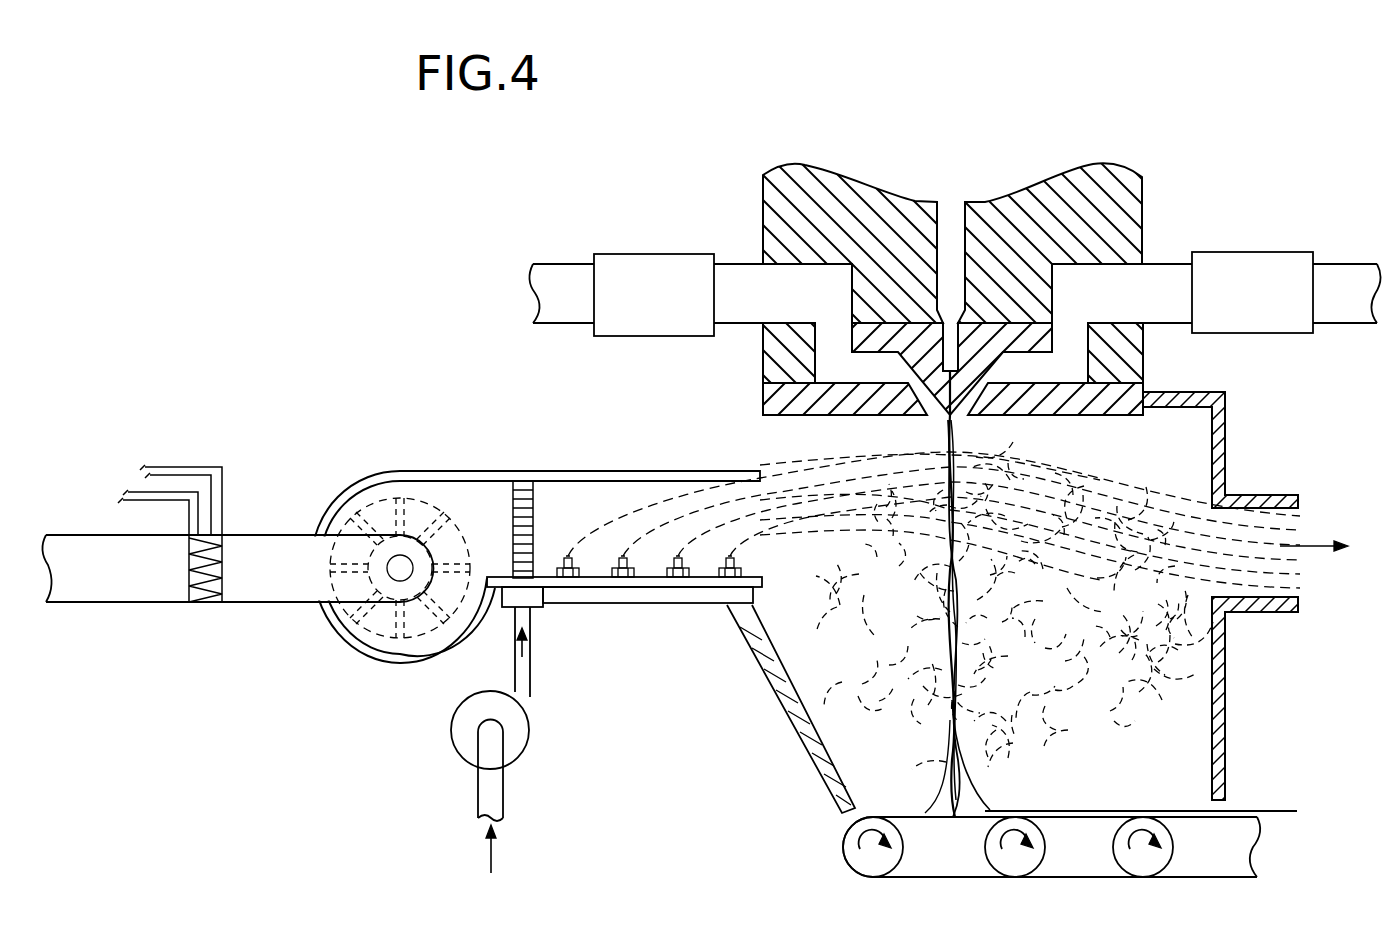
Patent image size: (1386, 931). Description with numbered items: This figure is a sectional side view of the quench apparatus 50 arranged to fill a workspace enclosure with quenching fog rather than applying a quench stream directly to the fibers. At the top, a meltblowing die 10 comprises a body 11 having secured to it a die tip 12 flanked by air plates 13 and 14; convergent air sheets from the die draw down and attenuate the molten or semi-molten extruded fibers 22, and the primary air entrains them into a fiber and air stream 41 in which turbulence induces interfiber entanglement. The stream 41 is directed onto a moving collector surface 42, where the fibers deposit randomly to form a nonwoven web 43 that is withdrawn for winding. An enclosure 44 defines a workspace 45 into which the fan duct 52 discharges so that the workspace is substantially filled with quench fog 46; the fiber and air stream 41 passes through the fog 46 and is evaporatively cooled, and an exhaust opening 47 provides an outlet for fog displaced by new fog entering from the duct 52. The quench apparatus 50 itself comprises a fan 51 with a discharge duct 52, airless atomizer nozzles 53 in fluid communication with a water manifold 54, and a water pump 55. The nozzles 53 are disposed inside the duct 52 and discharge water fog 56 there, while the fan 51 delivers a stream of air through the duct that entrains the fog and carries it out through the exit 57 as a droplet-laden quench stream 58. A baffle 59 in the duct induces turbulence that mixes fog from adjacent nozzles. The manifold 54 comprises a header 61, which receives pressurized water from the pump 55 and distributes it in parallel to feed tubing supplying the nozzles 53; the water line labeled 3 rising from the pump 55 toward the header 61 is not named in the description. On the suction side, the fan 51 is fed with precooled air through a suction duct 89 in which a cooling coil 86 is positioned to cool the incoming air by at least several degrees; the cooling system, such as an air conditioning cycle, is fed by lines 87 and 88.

The liquid supply line 3 is at (508, 652).
The meltblowing die 10 is at (705, 128).
The body 11 is at (1145, 195).
The die tip 12 is at (1040, 344).
The air plate 13 is at (866, 418).
The air plate 14 is at (1107, 413).
The extruded fibers 22 is at (957, 440).
The fiber and air stream 41 is at (957, 522).
The collector surface 42 is at (925, 814).
The nonwoven fabric or web 43 is at (1110, 812).
The enclosure 44 is at (798, 738).
The workspace 45 is at (922, 690).
The quench fog 46 is at (880, 500).
The exhaust opening 47 is at (1308, 540).
The quench apparatus 50 is at (341, 348).
The fan 51 is at (318, 505).
The discharge duct 52 is at (612, 471).
The airless atomizer nozzles 53 is at (622, 594).
The water manifold 54 is at (608, 604).
The water pump 55 is at (533, 733).
The water fog 56 is at (700, 518).
The exit 57 is at (750, 530).
The quench stream 58 is at (812, 505).
The baffle 59 is at (503, 495).
The header 61 is at (530, 605).
The cooling coil 86 is at (198, 603).
The line 87 is at (172, 462).
The line 88 is at (150, 492).
The suction duct 89 is at (286, 603).